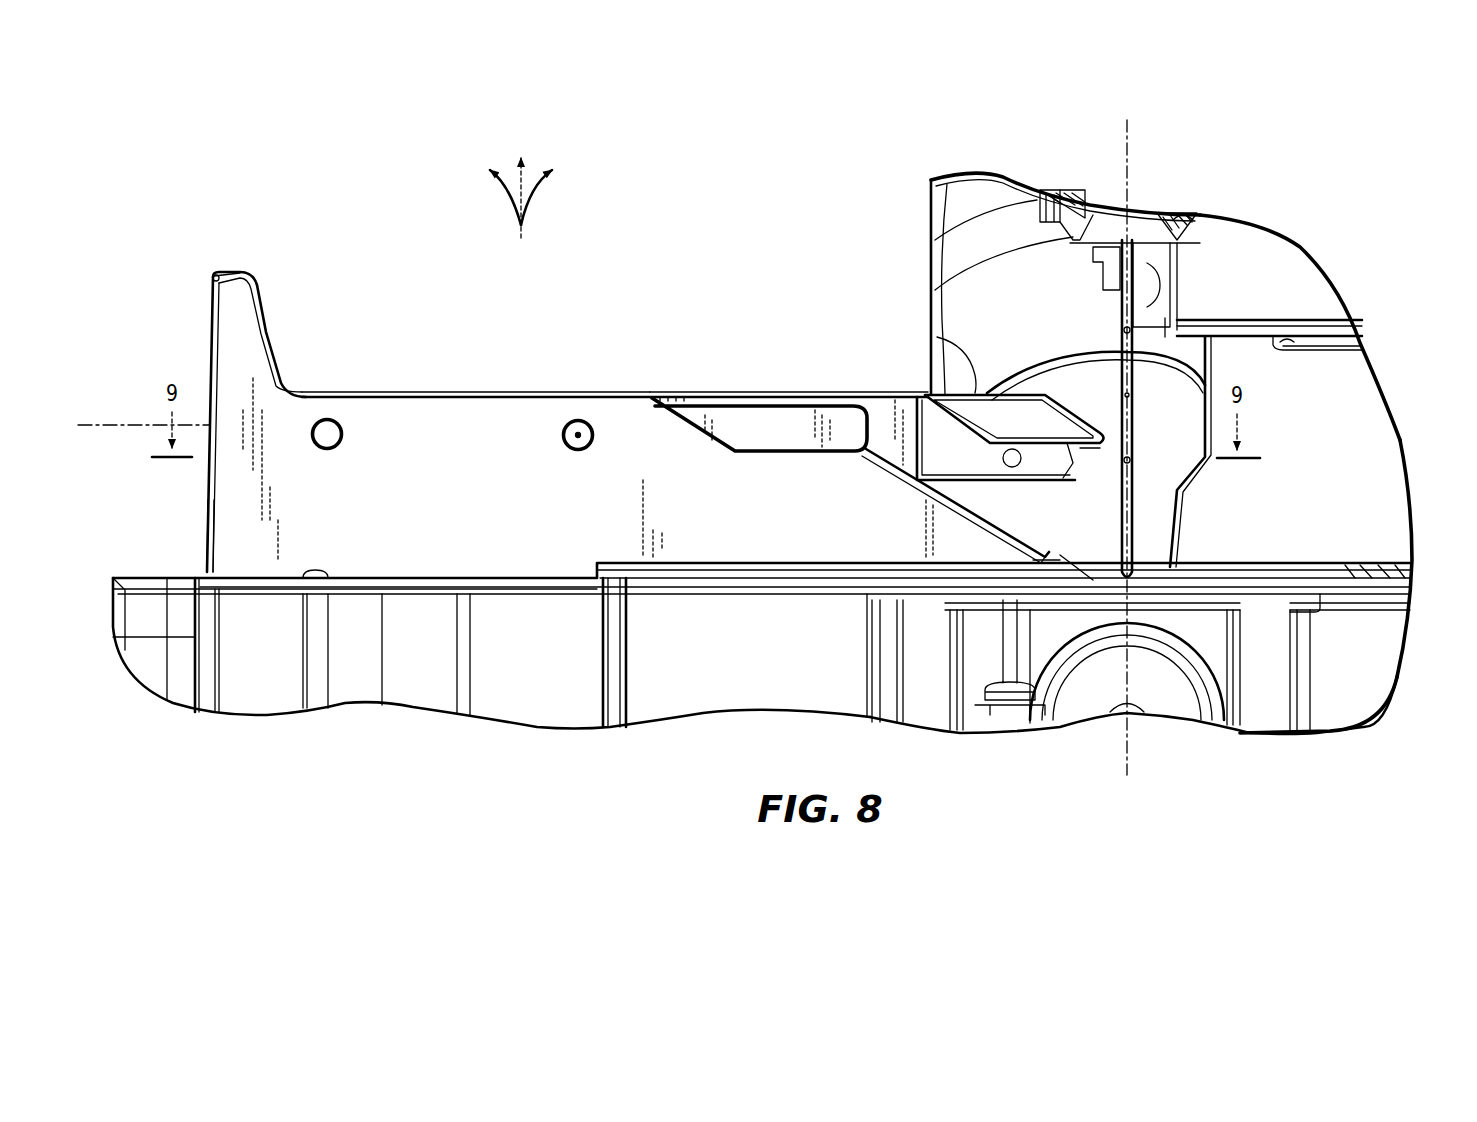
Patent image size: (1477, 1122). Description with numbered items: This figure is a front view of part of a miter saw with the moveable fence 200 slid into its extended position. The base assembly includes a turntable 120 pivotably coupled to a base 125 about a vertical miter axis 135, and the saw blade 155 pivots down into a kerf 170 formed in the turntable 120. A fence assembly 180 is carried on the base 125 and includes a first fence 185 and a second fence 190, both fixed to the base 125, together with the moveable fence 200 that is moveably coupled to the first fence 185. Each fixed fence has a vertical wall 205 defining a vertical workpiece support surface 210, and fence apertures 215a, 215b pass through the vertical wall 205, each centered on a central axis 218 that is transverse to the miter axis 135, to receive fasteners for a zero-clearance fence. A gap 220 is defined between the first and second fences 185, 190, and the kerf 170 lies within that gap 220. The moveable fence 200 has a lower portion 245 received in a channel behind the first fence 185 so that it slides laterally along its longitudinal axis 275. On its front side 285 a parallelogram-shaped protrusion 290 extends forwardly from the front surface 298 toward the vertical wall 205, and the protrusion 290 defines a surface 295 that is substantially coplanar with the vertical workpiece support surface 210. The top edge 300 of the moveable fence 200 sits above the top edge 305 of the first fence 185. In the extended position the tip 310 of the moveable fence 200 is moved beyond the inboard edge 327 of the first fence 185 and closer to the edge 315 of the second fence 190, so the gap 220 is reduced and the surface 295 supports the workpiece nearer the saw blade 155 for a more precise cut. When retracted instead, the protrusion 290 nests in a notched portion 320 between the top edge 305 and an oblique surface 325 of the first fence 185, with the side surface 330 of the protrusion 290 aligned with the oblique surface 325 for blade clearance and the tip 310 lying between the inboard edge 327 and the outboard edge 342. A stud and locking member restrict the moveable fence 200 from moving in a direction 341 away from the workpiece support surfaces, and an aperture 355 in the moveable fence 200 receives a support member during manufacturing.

The turntable 120 is at (1335, 688).
The base 125 is at (258, 680).
The miter axis 135 is at (1130, 152).
The saw blade 155 is at (1120, 332).
The kerf 170 is at (1145, 545).
The fence assembly 180 is at (1323, 240).
The first fence 185 is at (213, 295).
The second fence 190 is at (1317, 360).
The moveable fence 200 is at (825, 318).
The vertical wall 205 is at (290, 505).
The vertical workpiece support surface 210 is at (799, 498).
The fence aperture 215a is at (336, 420).
The fence aperture 215b is at (565, 421).
The central axis 218 is at (578, 435).
The gap 220 is at (1152, 522).
The lower portion 245 is at (1057, 560).
The longitudinal axis 275 is at (130, 420).
The front side 285 is at (755, 396).
The protrusion 290 is at (927, 392).
The surface 295 is at (1068, 393).
The front surface 298 is at (730, 435).
The top edge 300 is at (820, 395).
The top edge 305 is at (430, 392).
The tip 310 is at (1108, 445).
The edge 315 is at (1198, 358).
The notched portion 320 is at (733, 470).
The oblique surface 325 is at (1033, 498).
The inboard edge 327 is at (1060, 555).
The side surface 330 is at (1063, 393).
The direction 341 is at (520, 226).
The outboard edge 342 is at (210, 365).
The aperture 355 is at (1003, 458).